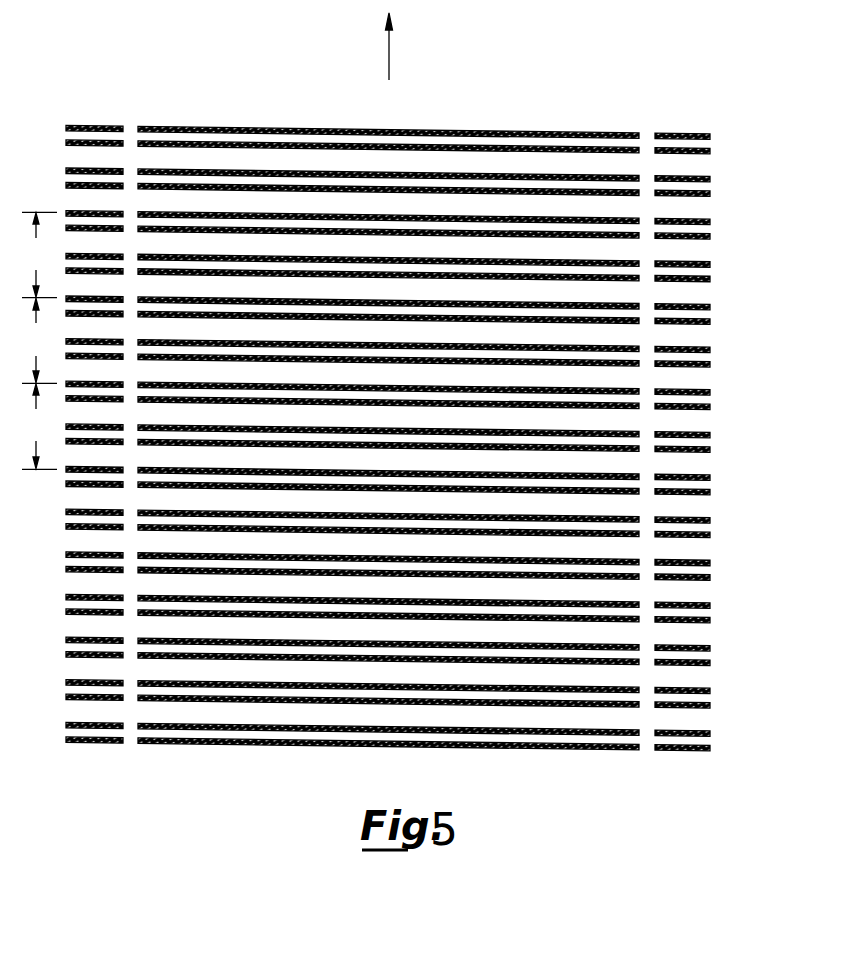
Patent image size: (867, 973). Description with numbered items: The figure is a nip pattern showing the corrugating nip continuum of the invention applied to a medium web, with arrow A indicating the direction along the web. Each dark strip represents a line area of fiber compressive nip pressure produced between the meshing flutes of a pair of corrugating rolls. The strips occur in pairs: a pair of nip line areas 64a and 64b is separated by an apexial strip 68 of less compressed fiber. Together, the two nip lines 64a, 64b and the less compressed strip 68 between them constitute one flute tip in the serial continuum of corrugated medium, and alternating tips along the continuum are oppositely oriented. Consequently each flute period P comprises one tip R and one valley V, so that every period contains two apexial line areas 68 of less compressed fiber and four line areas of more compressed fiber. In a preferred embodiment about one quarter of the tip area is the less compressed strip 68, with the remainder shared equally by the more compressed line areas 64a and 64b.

The nip line area 64a is at (710, 220).
The nip line area 64b is at (710, 237).
The apexial strip of less compressed fiber 68 is at (445, 425).
The flute period P is at (39, 340).
The tip R is at (239, 221).
The valley V is at (202, 265).
The direction of medium travel A is at (381, 104).